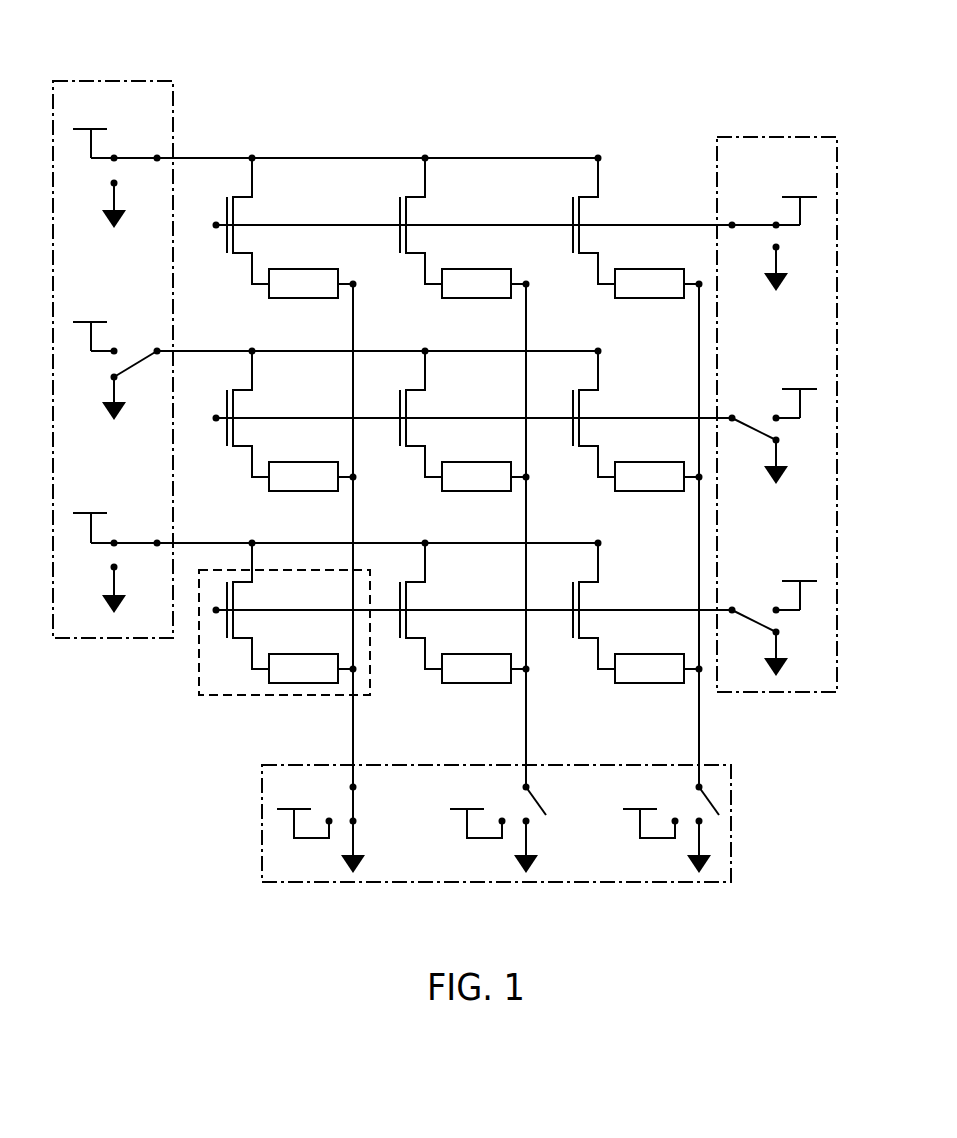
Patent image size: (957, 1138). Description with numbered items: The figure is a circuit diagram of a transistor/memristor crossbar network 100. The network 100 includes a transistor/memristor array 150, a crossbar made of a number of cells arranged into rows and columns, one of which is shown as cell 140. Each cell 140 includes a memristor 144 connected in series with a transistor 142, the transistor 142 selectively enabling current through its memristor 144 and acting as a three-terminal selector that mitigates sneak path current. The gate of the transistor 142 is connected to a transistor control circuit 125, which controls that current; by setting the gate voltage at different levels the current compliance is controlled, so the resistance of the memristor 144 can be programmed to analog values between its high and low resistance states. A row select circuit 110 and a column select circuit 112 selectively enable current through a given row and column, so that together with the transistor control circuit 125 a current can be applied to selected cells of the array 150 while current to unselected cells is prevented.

The transistor/memristor crossbar network 100 is at (221, 32).
The row select circuit 110 is at (102, 81).
The column select circuit 112 is at (731, 818).
The transistor control circuit 125 is at (772, 137).
The cell 140 is at (223, 695).
The transistor 142 is at (227, 627).
The memristor 144 is at (310, 683).
The transistor/memristor array 150 is at (524, 123).